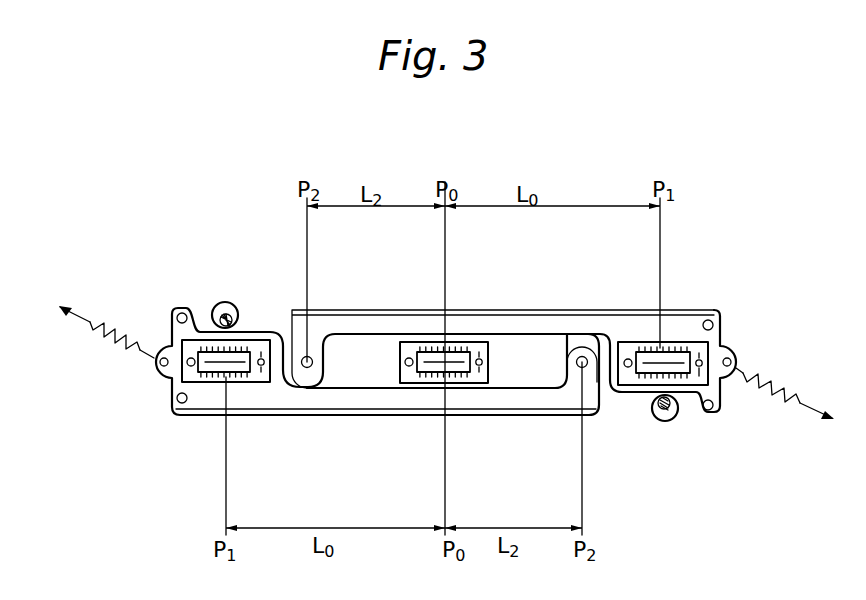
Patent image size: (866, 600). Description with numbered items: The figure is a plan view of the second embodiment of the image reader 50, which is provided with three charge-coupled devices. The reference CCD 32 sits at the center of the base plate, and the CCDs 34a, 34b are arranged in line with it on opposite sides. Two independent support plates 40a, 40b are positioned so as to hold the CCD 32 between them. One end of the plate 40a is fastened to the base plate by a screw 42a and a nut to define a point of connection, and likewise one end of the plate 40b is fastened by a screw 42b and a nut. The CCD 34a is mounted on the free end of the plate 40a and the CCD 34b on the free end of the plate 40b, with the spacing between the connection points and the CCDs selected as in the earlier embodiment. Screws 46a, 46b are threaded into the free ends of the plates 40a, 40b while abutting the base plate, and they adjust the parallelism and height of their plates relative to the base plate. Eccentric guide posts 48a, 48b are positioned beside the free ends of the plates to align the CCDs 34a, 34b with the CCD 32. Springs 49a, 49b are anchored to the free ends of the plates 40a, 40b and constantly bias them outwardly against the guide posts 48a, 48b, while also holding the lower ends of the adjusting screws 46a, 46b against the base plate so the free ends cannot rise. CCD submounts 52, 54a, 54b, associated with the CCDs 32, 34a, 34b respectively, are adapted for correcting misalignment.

The reference CCD 32 is at (422, 348).
The CCD 34a is at (237, 378).
The CCD 34b is at (646, 346).
The support plate 40a is at (340, 400).
The support plate 40b is at (546, 312).
The screw 42a is at (583, 356).
The screw 42b is at (309, 356).
The adjusting screw 46a is at (180, 312).
The adjusting screw 46b is at (713, 323).
The eccentric guide post 48a is at (230, 303).
The eccentric guide post 48b is at (663, 421).
The spring 49a is at (120, 351).
The spring 49b is at (788, 382).
The image reader 50 is at (713, 228).
The CCD submount 52 is at (480, 342).
The CCD submount 54a is at (198, 384).
The CCD submount 54b is at (692, 342).